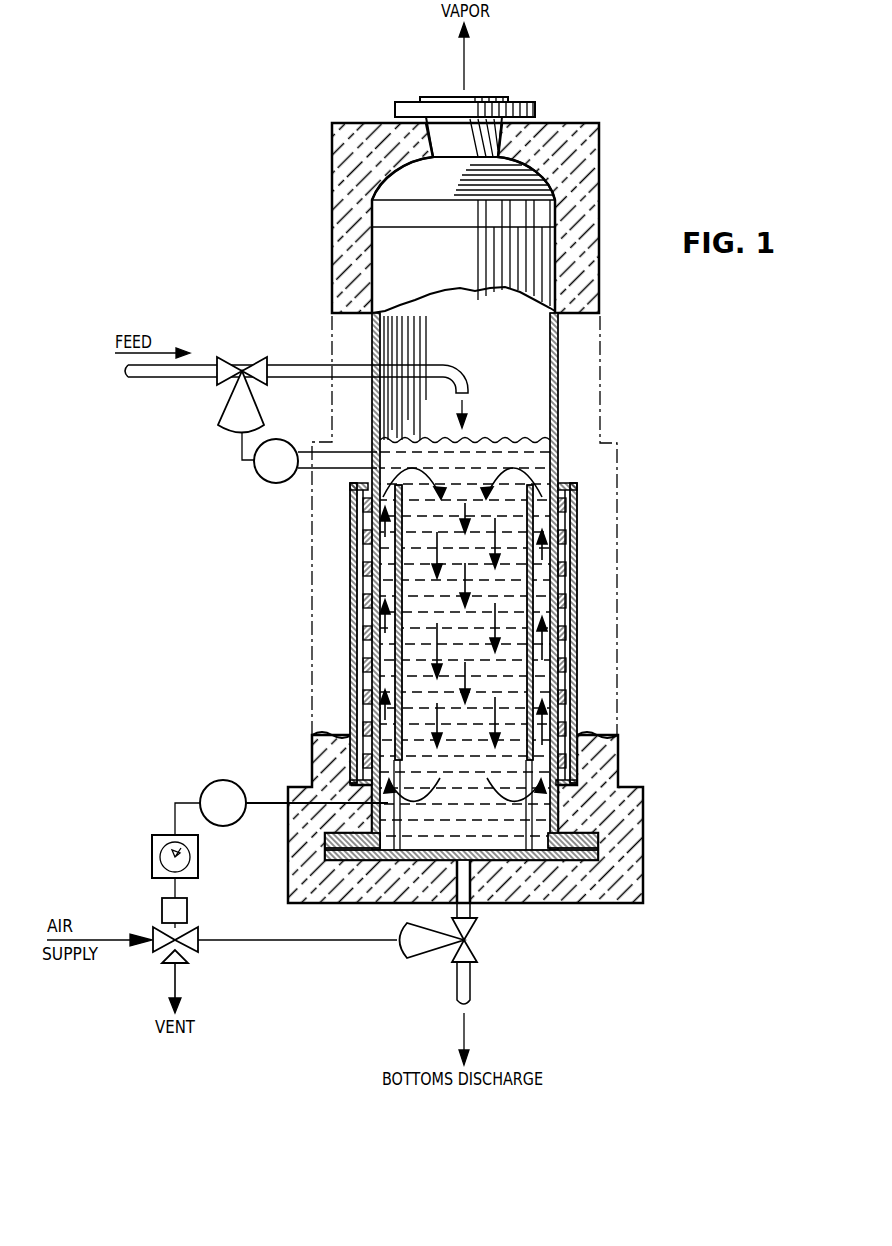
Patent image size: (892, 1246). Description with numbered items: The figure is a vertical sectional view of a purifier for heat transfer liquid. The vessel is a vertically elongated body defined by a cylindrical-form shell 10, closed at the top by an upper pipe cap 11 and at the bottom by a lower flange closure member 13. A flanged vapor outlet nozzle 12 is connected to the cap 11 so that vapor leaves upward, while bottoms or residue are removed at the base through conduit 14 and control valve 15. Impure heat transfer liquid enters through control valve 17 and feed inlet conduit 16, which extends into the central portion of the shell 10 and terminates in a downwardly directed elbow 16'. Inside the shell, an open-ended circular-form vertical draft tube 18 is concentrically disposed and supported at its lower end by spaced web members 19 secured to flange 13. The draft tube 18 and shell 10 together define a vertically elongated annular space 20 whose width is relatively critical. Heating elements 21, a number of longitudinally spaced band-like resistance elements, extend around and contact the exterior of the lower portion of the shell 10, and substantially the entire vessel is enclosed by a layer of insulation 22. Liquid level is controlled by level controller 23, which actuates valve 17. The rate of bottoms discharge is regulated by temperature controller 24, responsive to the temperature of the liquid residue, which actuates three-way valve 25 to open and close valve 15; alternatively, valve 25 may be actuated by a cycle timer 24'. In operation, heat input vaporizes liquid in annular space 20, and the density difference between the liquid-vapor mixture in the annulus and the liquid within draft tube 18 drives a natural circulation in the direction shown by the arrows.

The cylindrical-form shell 10 is at (558, 380).
The upper pipe cap 11 is at (533, 183).
The flanged vapor outlet nozzle 12 is at (520, 100).
The lower flange closure member 13 is at (547, 862).
The conduit 14 is at (470, 910).
The control valve 15 is at (477, 953).
The feed inlet conduit 16 is at (284, 347).
The downwardly directed elbow 16' is at (476, 371).
The control valve 17 is at (260, 360).
The draft tube 18 is at (578, 570).
The web members 19 is at (401, 818).
The annular space 20 is at (558, 668).
The heating elements 21 is at (362, 627).
The insulation 22 is at (347, 188).
The level controller 23 is at (263, 478).
The temperature controller 24 is at (281, 786).
The cycle timer 24' is at (146, 865).
The three-way valve 25 is at (158, 948).